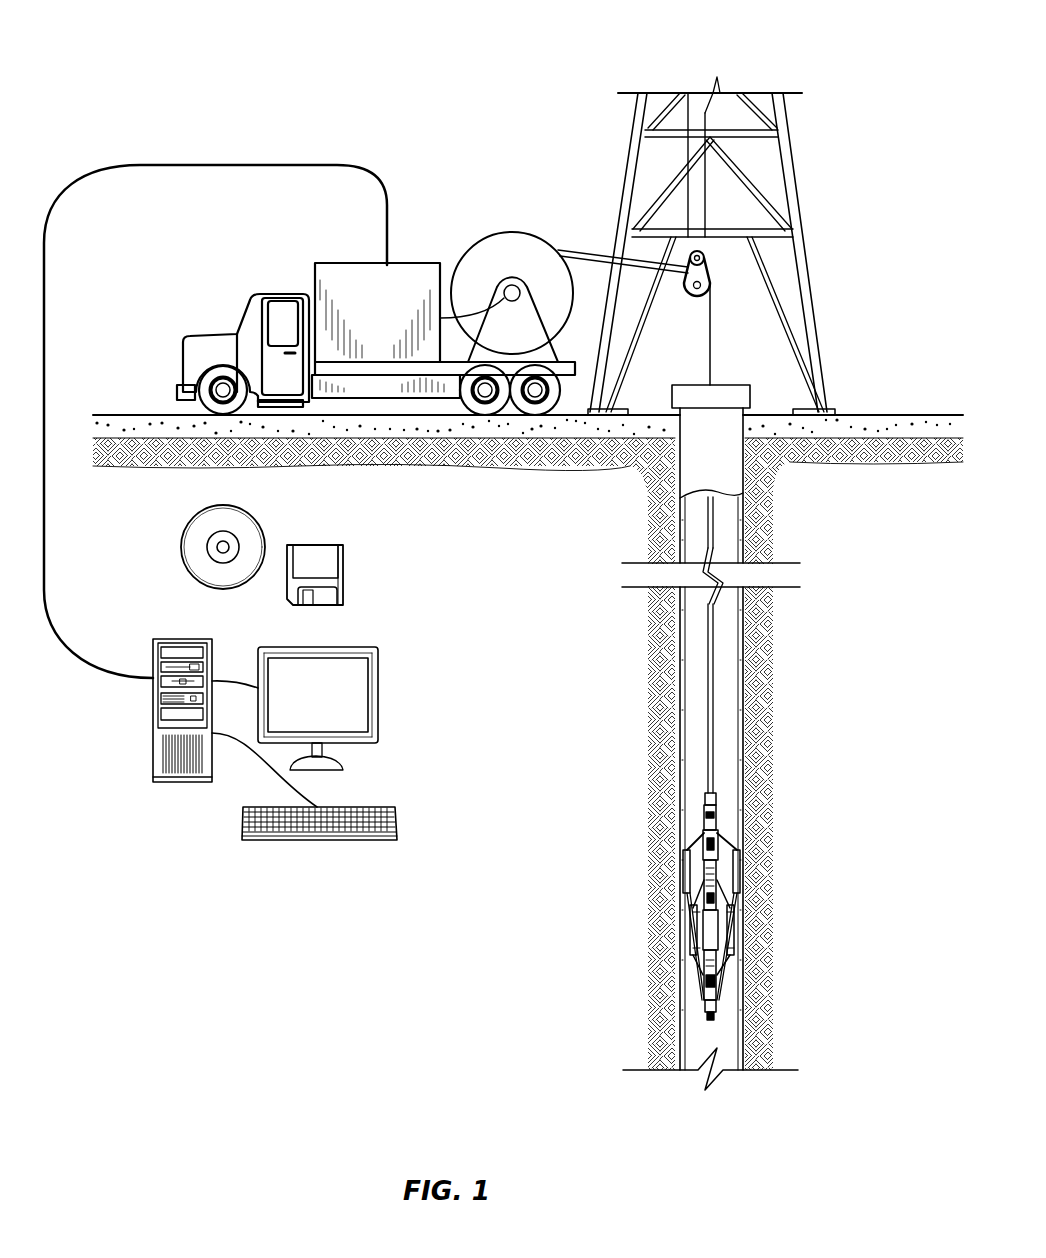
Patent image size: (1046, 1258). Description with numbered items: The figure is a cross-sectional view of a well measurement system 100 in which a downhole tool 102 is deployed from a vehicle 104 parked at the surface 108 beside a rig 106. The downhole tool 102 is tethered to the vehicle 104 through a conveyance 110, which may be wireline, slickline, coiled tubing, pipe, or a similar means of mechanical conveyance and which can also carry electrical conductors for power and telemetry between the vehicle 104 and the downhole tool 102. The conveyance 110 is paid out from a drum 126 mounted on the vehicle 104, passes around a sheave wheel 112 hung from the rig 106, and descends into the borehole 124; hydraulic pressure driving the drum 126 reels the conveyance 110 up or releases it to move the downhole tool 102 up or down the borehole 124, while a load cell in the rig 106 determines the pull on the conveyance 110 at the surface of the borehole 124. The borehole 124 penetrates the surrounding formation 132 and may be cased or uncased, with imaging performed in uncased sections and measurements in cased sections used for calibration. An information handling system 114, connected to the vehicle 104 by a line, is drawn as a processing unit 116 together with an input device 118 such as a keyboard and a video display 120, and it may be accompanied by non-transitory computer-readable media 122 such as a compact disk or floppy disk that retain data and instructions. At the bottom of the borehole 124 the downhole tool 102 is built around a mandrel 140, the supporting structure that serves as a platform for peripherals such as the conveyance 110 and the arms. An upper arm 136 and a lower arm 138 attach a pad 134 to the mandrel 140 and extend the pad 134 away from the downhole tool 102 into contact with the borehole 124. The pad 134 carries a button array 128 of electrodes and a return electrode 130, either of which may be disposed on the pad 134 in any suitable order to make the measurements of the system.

The well measurement system 100 is at (221, 48).
The downhole tool 102 is at (664, 869).
The vehicle 104 is at (333, 262).
The rig 106 is at (792, 157).
The surface 108 is at (885, 414).
The conveyance 110 is at (706, 660).
The sheave wheel 112 is at (697, 300).
The information handling system 114 is at (299, 769).
The processing unit 116 is at (182, 639).
The input device 118 is at (398, 822).
The video display 120 is at (378, 688).
The non-transitory computer-readable media 122 is at (263, 530).
The borehole 124 is at (735, 537).
The drum 126 is at (500, 232).
The button array 128 is at (733, 933).
The return electrode 130 is at (733, 945).
The subterranean formation 132 is at (912, 660).
The pad 134 is at (756, 857).
The upper arm 136 is at (739, 897).
The lower arm 138 is at (692, 975).
The mandrel 140 is at (705, 925).